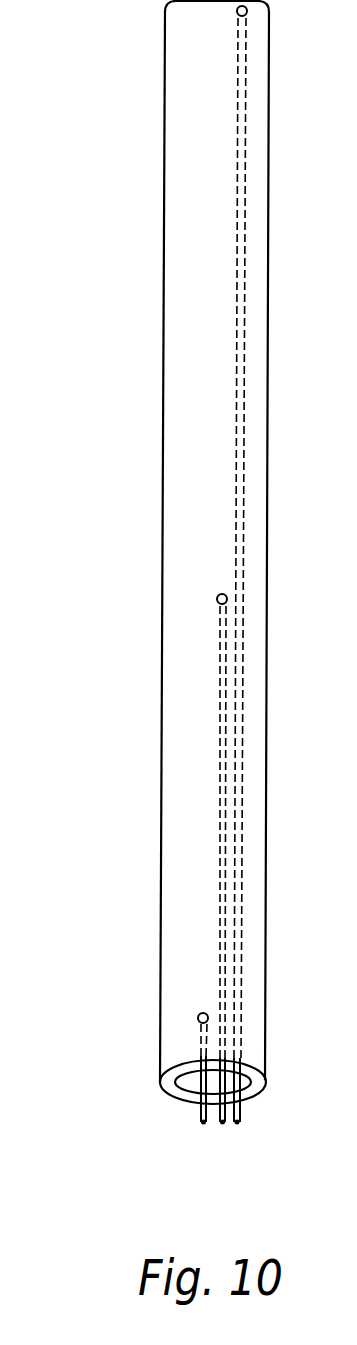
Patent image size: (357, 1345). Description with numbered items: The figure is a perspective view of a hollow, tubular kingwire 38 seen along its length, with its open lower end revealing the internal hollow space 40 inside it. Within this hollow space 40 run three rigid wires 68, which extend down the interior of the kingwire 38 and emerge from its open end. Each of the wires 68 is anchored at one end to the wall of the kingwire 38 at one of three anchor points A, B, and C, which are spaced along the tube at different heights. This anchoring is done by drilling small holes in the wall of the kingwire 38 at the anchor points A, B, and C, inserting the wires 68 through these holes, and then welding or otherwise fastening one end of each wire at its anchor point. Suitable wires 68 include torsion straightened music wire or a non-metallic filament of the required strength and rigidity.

The hollow kingwire 38 is at (190, 382).
The internal hollow space 40 is at (189, 1079).
The rigid wires 68 is at (282, 1150).
The anchor point A is at (200, 1013).
The anchor point B is at (218, 602).
The anchor point C is at (237, 15).